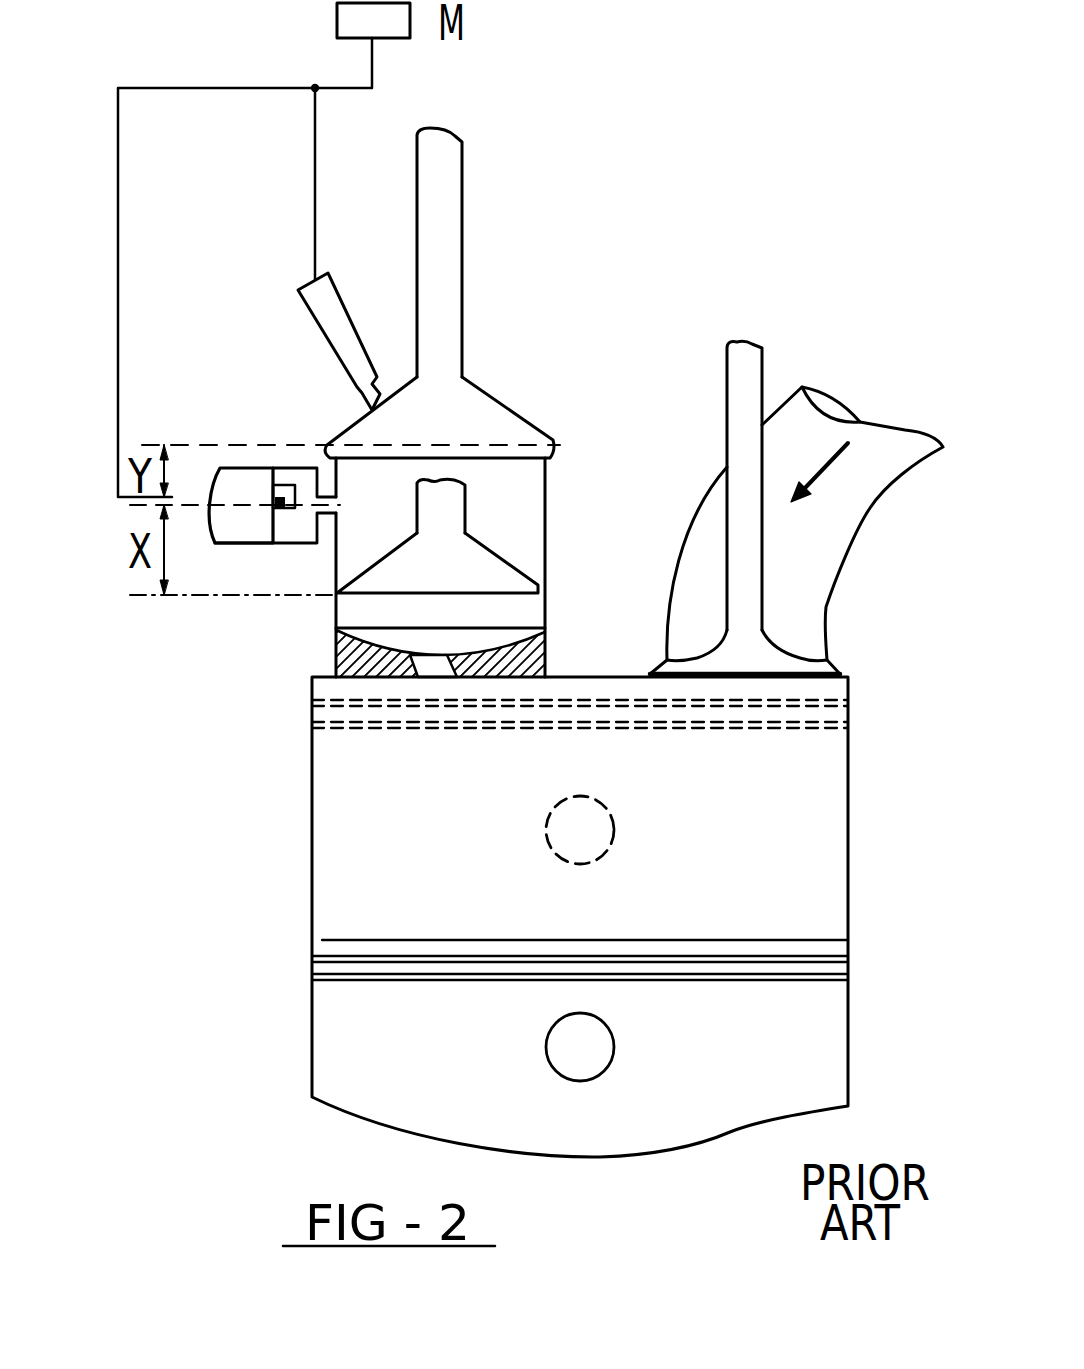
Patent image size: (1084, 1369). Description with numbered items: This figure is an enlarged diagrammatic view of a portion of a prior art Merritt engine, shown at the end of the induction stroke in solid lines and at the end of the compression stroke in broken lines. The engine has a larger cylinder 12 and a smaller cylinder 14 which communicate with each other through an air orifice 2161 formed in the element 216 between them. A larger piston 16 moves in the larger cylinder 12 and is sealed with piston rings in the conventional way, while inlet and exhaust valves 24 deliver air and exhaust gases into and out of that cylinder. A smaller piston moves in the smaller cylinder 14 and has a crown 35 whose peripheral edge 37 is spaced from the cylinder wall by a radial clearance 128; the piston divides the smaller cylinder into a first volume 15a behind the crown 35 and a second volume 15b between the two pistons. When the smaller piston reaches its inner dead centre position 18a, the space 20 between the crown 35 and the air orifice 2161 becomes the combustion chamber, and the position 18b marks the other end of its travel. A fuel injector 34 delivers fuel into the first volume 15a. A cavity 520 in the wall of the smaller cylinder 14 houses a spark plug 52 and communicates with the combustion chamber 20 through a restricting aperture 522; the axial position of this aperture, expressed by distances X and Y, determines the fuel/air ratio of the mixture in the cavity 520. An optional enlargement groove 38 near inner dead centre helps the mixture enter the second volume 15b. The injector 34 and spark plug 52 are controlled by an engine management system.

The larger cylinder 12 is at (333, 689).
The smaller cylinder 14 is at (518, 495).
The first volume 15a is at (510, 537).
The second volume 15b is at (492, 608).
The larger piston 16 is at (325, 763).
The inner dead centre position 18a is at (450, 400).
The exhaust valve 18b is at (457, 553).
The combustion chamber 20 is at (345, 595).
The inlet and exhaust valves 24 is at (750, 380).
The fuel injector 34 is at (303, 286).
The crown 35 is at (513, 597).
The edge 37 is at (365, 617).
The enlargement groove 38 is at (555, 445).
The spark plug 52 is at (246, 497).
The radial clearance 128 is at (539, 585).
The insert 216 is at (346, 658).
The cavity 520 is at (303, 497).
The aperture 522 is at (340, 506).
The air orifice 2161 is at (437, 668).